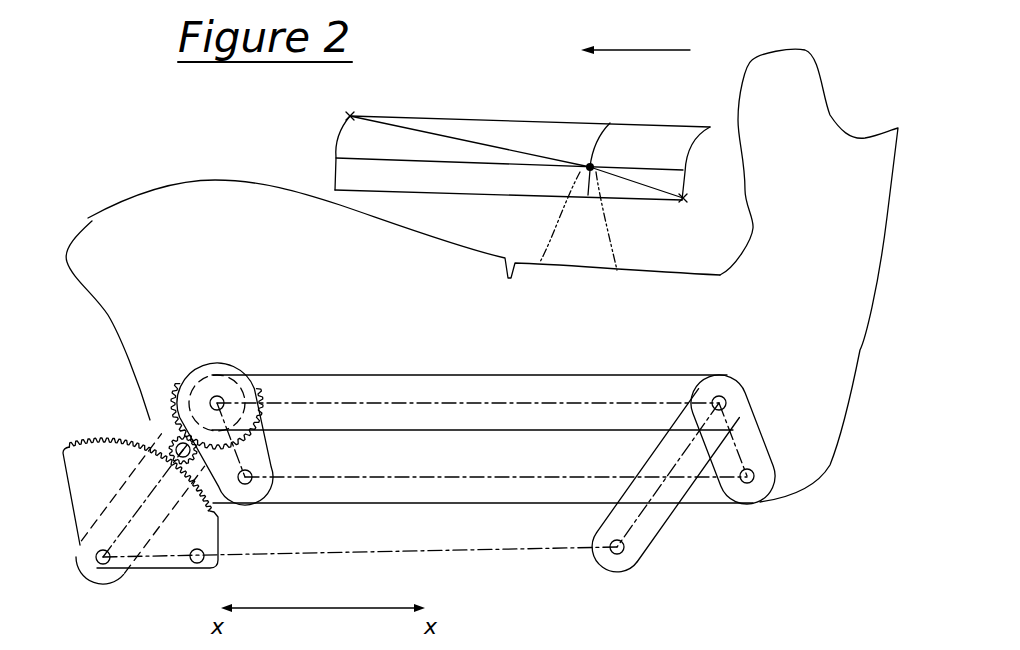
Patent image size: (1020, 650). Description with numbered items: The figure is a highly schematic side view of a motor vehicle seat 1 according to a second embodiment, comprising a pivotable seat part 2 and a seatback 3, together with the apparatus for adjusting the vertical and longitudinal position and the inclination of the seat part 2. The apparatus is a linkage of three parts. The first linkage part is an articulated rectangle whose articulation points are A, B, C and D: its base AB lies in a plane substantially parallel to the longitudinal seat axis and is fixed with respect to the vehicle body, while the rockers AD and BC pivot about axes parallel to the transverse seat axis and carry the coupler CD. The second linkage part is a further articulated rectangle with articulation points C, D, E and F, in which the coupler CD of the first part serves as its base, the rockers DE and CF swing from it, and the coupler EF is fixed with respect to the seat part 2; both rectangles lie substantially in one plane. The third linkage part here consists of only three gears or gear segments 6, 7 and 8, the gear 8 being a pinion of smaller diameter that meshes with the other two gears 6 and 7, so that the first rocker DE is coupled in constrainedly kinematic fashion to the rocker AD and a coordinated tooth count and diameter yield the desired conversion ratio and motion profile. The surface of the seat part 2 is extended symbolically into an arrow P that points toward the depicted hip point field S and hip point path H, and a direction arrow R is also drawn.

The motor vehicle seat 1 is at (101, 99).
The pivotable seat part 2 is at (92, 221).
The seatback 3 is at (810, 107).
The gear 6 is at (83, 490).
The gear 7 is at (185, 382).
The pinion gear 8 is at (165, 437).
The hip point path H is at (435, 132).
The hip point field S is at (675, 135).
The arrow P is at (600, 192).
The direction of movement R is at (690, 50).
The articulation point A is at (93, 573).
The articulation point B is at (623, 561).
The articulation point C is at (720, 392).
The articulation point D is at (247, 378).
The articulation point E is at (230, 505).
The articulation point F is at (733, 503).